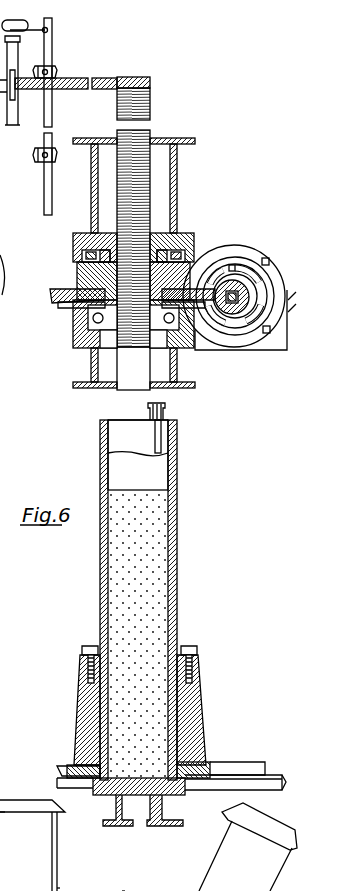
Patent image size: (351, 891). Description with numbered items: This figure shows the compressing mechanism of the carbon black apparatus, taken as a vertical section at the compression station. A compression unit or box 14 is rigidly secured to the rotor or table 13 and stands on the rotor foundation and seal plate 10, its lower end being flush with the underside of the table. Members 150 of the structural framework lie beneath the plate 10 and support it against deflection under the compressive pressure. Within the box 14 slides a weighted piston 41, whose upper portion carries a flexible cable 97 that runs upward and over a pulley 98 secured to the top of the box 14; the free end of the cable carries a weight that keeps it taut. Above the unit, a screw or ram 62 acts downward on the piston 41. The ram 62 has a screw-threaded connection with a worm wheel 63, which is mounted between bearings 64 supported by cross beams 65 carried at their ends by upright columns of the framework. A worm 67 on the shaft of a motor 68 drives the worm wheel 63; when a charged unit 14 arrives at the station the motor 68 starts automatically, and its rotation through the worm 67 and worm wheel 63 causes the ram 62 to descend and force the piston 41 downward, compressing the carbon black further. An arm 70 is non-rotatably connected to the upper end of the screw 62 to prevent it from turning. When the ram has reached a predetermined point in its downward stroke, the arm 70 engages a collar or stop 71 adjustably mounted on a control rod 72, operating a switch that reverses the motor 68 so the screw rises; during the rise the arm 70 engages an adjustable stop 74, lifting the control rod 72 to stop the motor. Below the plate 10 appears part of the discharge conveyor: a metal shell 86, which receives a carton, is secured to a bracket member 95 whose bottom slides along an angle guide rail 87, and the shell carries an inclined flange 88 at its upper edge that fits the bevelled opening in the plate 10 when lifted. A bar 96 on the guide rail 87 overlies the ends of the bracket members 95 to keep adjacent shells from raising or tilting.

The rotor foundation and seal plate 10 is at (185, 793).
The rotor or table 13 is at (206, 768).
The compression unit or box 14 is at (177, 563).
The piston 41 is at (160, 472).
The screw or ram 62 is at (150, 100).
The worm wheel 63 is at (98, 318).
The bearings 64 is at (82, 262).
The cross beams 65 is at (91, 212).
The worm 67 is at (236, 302).
The motor 68 is at (238, 252).
The arm 70 is at (82, 77).
The collar or stop 71 is at (33, 158).
The control rod 72 is at (52, 108).
The adjustable stop 74 is at (53, 68).
The metal shell 86 is at (204, 884).
The angle guide rail 87 is at (131, 884).
The inclined flange 88 is at (12, 805).
The bracket member 95 is at (70, 884).
The bar 96 is at (14, 850).
The flexible cable 97 is at (154, 430).
The pulley 98 is at (166, 405).
The members of the structural framework 150 is at (160, 827).